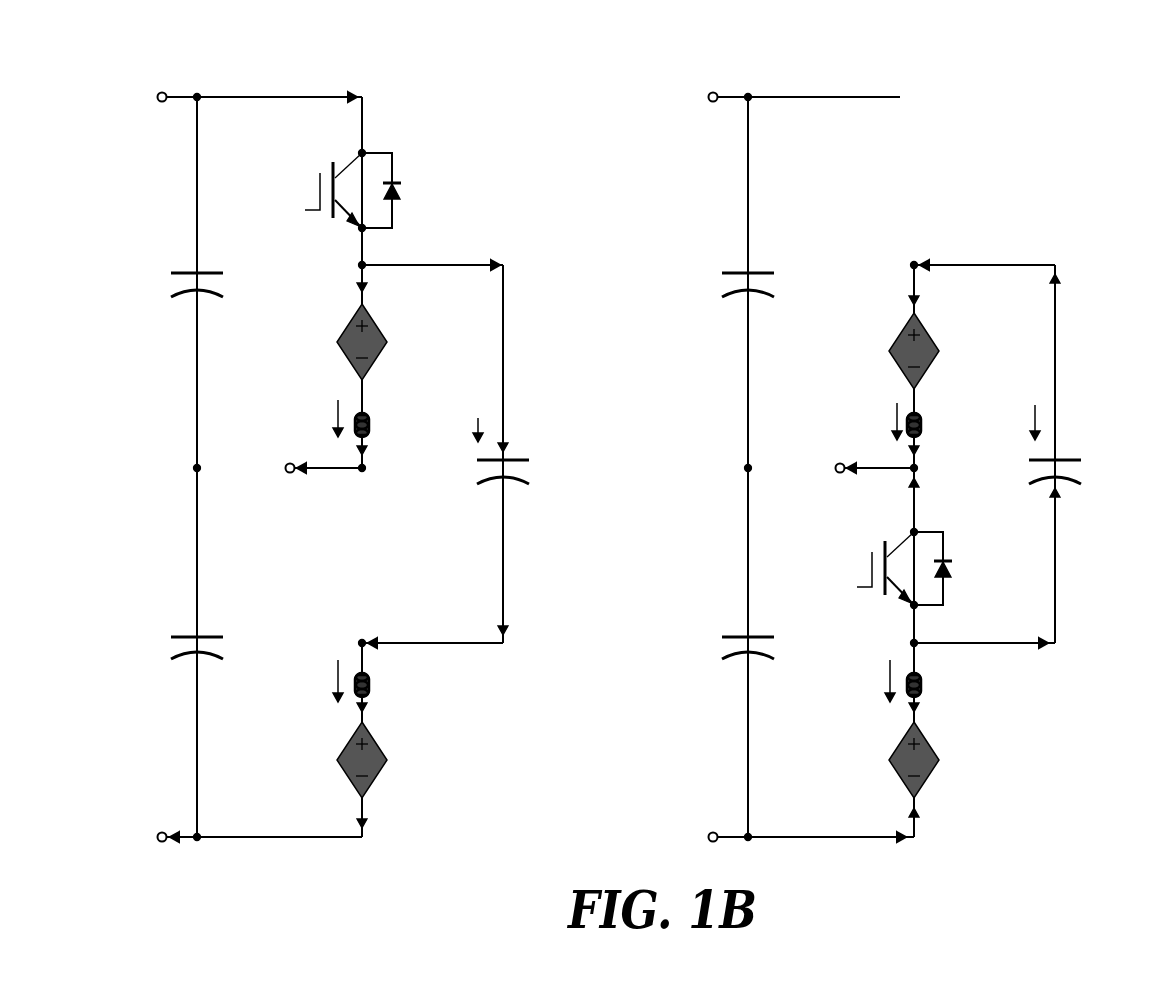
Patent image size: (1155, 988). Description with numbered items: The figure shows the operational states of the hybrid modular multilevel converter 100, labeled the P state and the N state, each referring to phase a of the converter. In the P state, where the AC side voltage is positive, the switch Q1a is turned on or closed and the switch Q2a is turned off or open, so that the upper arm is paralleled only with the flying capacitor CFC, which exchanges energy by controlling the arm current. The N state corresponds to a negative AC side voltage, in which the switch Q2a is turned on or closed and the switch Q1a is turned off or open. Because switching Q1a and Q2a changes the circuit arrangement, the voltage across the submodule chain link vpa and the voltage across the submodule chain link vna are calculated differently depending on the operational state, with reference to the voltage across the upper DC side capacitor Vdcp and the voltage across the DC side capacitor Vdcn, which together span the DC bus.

The hybrid modular multilevel converter 100 is at (86, 65).
The switch Q1a is at (599, 191).
The switch Q2a is at (606, 569).
The flying capacitor CFC is at (813, 471).
The voltage across the upper DC side capacitor Vdcp is at (443, 281).
The voltage across the DC side capacitor Vdcn is at (443, 644).
The voltage across the submodule chain link vpa is at (660, 346).
The voltage across the submodule chain link vna is at (662, 760).